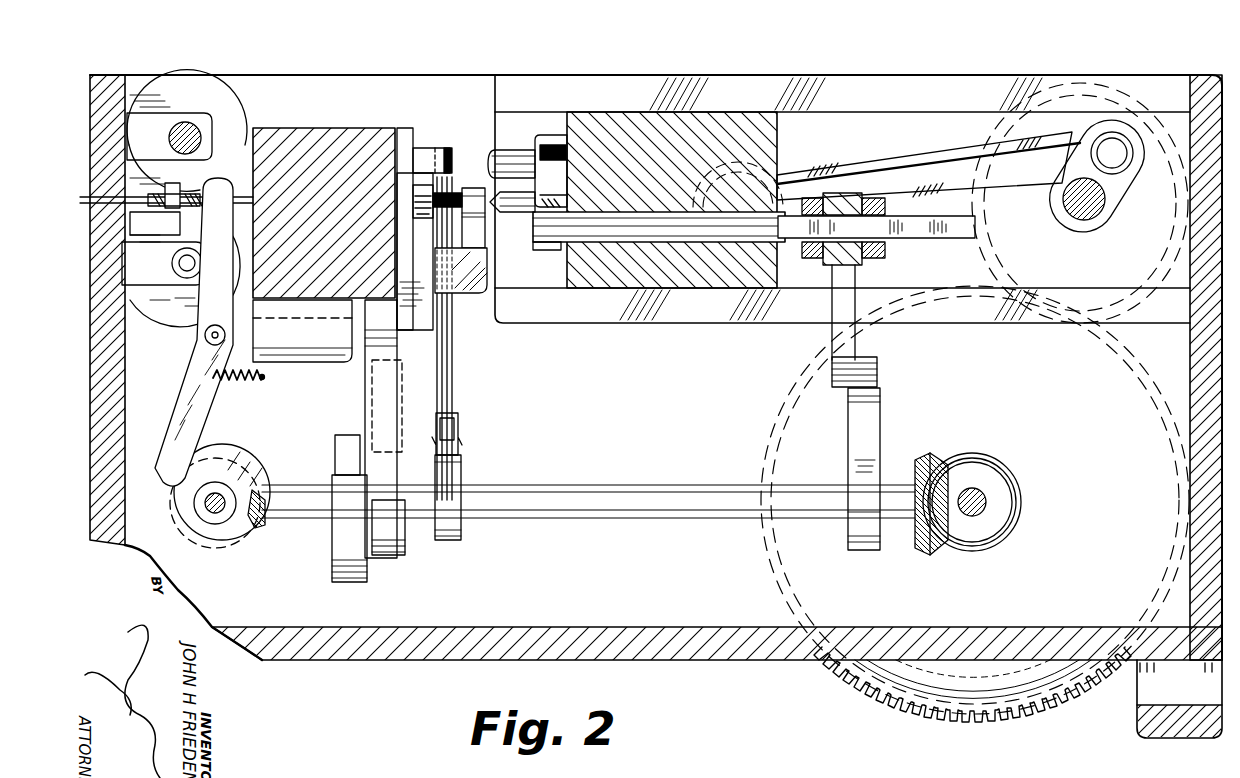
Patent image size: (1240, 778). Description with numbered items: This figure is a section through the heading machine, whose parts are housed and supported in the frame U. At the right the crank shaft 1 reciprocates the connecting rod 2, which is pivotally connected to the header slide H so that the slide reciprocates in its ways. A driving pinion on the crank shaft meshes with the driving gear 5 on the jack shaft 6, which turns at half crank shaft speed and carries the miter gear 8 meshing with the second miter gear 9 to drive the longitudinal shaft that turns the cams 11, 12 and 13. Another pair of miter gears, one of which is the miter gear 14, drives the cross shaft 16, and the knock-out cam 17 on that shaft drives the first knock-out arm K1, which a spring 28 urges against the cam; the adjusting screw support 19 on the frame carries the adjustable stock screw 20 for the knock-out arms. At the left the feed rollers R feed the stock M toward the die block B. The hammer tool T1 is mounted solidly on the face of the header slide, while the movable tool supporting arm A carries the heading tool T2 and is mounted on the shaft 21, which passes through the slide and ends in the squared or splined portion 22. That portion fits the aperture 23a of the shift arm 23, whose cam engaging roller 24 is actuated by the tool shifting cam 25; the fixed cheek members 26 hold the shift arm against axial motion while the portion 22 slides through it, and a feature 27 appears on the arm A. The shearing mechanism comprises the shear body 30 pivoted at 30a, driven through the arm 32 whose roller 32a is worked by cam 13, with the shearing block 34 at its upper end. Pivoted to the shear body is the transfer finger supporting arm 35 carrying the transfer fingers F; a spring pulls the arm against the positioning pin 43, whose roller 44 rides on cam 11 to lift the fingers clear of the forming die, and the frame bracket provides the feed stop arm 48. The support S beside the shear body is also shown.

The crank shaft 1 is at (1100, 206).
The connecting rod 2 is at (1012, 177).
The driving gear 5 is at (975, 700).
The jack shaft 6 is at (984, 506).
The miter gear 8 is at (1000, 485).
The second miter gear 9 is at (930, 462).
The transfer finger actuating cam 11 is at (455, 493).
The shear cam 12 is at (385, 553).
The shear cam 13 is at (335, 553).
The miter gear 14 is at (266, 531).
The cross shaft 16 is at (210, 513).
The knock-out cam 17 is at (232, 459).
The adjusting screw support 19 is at (176, 209).
The adjustable stock screw 20 is at (160, 197).
The shaft 21 is at (626, 224).
The squared or splined portion 22 is at (876, 227).
The shift arm 23 is at (856, 277).
The aperture of shift arm 23a is at (830, 260).
The cam engaging roller 24 is at (878, 373).
The tool shifting cam 25 is at (880, 428).
The fixed cheek members 26 is at (876, 197).
The slot 27 is at (566, 150).
The spring 28 is at (262, 380).
The shear body 30 is at (396, 429).
The pivot 30a is at (355, 327).
The arm 32 is at (372, 392).
The roller 32a is at (340, 456).
The shearing block 34 is at (424, 218).
The transfer finger supporting arm 35 is at (405, 140).
The positioning pin 43 is at (452, 353).
The roller 44 is at (460, 441).
The feed stop arm 48 is at (474, 188).
The tool supporting arm A is at (551, 171).
The die block B is at (318, 143).
The transfer fingers F is at (404, 203).
The header slide H is at (700, 128).
The first knock-out arm K1 is at (216, 398).
The stock M is at (159, 221).
The feed rollers R is at (184, 198).
The support S is at (411, 275).
The hammer tool T1 is at (520, 214).
The heading tool T2 is at (515, 160).
The frame U is at (392, 660).